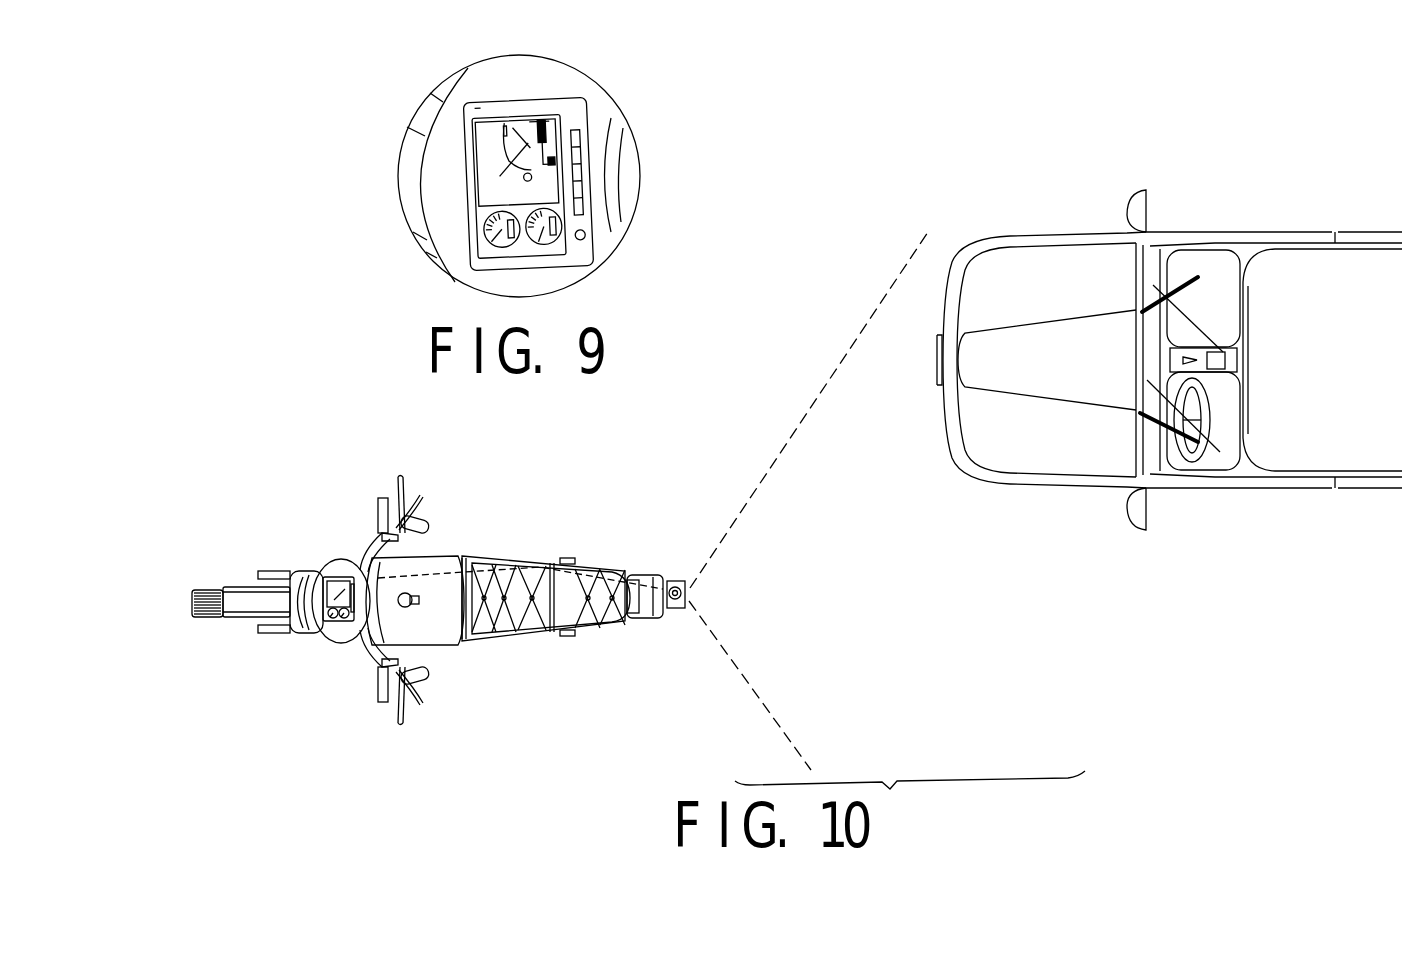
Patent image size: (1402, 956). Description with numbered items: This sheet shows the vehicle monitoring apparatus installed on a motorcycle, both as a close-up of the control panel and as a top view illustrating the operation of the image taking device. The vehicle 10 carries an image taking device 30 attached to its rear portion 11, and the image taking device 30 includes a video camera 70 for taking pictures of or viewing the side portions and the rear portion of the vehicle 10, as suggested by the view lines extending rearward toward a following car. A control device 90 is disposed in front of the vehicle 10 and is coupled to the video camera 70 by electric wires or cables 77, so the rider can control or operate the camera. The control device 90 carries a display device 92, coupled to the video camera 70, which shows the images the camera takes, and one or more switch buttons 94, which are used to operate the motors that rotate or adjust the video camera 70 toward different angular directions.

In FIG. 10, the vehicle 10 is at (466, 659).
In FIG. 10, the rear portion 11 is at (666, 578).
In FIG. 10, the image taking device 30 is at (677, 608).
In FIG. 10, the video camera 70 is at (680, 583).
In FIG. 10, the cables 77 is at (436, 574).
In FIG. 9, the control device 90 is at (518, 113).
In FIG. 10, the control device 90 is at (335, 582).
In FIG. 9, the display device 92 is at (488, 167).
In FIG. 10, the display device 92 is at (328, 590).
In FIG. 9, the switch button 94 is at (580, 168).
In FIG. 10, the switch button 94 is at (353, 620).